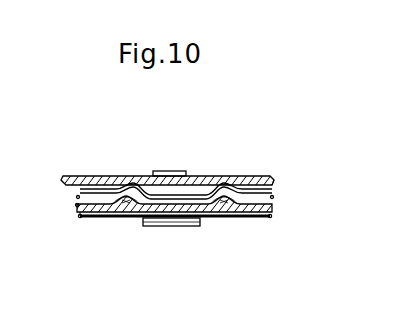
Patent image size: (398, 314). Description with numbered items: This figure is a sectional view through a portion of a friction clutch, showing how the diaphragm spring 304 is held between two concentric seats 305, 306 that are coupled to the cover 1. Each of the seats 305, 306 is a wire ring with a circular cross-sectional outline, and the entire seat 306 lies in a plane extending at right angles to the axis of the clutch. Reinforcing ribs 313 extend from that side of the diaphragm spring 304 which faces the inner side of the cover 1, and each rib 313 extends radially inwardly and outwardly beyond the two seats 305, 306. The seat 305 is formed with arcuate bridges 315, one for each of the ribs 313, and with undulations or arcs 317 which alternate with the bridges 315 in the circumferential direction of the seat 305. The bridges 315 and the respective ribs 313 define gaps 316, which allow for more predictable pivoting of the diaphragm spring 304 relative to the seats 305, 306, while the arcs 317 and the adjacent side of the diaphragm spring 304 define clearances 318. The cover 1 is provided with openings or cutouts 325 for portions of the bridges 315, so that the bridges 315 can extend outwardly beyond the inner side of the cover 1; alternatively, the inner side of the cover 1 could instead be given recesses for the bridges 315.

The cover 1 is at (269, 176).
The diaphragm spring 304 is at (85, 208).
The seat 305 is at (78, 195).
The seat 306 is at (105, 218).
The reinforcing portions or ribs 313 is at (127, 200).
The arcuate portions or bridges 315 is at (118, 188).
The gaps 316 is at (133, 183).
The undulations or arcs 317 is at (168, 227).
The clearances 318 is at (198, 226).
The openings or cutouts 325 is at (105, 177).